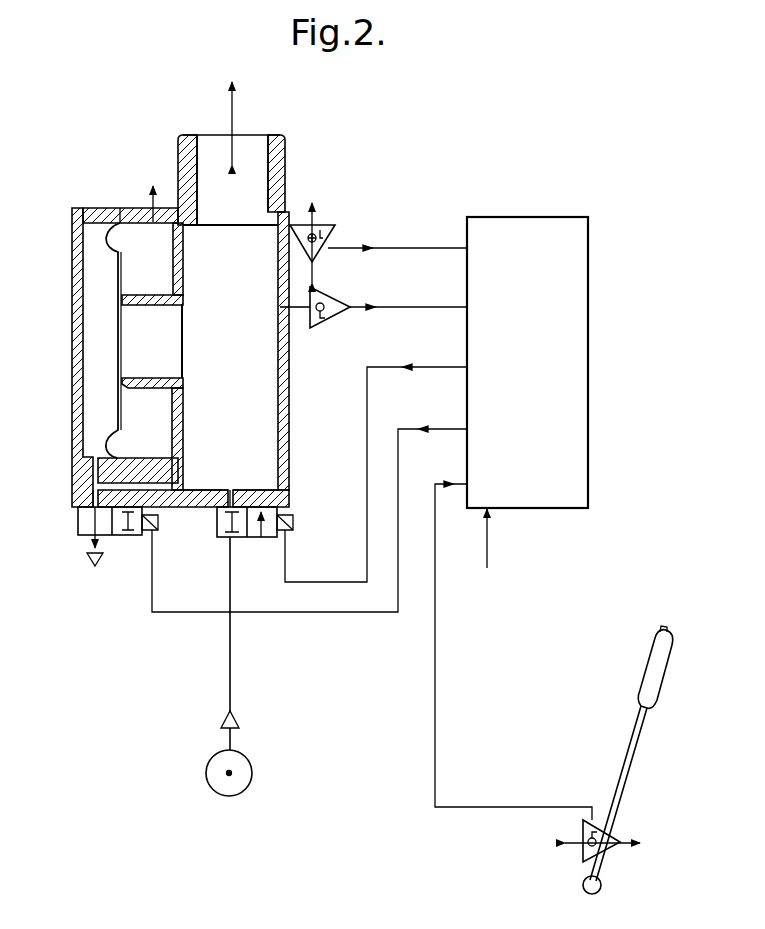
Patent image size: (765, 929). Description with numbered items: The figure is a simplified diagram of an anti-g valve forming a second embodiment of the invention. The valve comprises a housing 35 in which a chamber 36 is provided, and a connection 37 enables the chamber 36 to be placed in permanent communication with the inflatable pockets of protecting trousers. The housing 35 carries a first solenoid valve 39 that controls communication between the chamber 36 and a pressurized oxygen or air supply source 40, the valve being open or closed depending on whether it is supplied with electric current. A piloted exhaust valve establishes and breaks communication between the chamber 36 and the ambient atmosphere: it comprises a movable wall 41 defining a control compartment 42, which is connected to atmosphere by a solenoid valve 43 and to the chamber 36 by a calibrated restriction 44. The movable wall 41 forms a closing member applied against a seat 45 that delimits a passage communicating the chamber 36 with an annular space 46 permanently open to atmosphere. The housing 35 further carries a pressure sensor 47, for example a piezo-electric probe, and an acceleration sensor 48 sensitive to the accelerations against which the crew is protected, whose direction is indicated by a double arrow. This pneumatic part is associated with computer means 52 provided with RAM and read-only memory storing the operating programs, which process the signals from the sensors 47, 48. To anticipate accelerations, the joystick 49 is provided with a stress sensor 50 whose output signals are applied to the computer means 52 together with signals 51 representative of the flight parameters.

The housing 35 is at (287, 168).
The chamber 36 is at (246, 450).
The connection 37 is at (185, 156).
The first solenoid valve 39 is at (262, 538).
The pressurized oxygen or air supply source 40 is at (217, 760).
The movable wall 41 is at (118, 287).
The control compartment 42 is at (100, 263).
The solenoid valve 43 is at (118, 535).
The calibrated restriction 44 is at (157, 490).
The seat 45 is at (130, 377).
The annular space 46 is at (148, 243).
The pressure sensor 47 is at (318, 327).
The acceleration sensor 48 is at (320, 253).
The joystick 49 is at (630, 738).
The stress sensor 50 is at (610, 833).
The flight parameter signals 51 is at (488, 540).
The computer means 52 is at (575, 373).